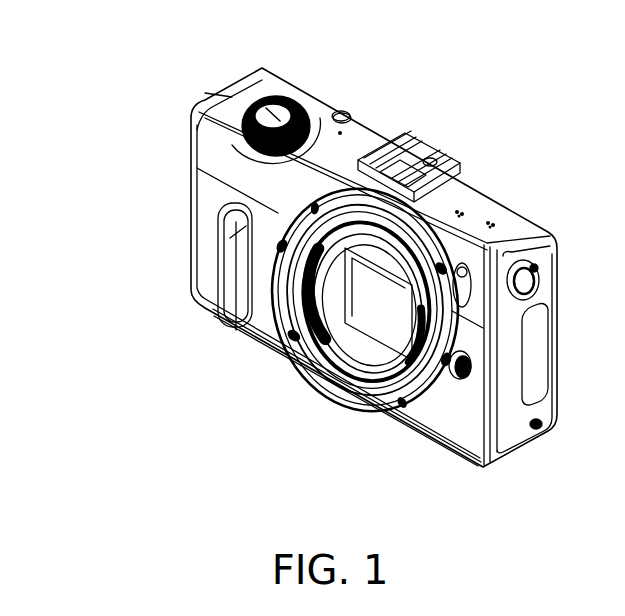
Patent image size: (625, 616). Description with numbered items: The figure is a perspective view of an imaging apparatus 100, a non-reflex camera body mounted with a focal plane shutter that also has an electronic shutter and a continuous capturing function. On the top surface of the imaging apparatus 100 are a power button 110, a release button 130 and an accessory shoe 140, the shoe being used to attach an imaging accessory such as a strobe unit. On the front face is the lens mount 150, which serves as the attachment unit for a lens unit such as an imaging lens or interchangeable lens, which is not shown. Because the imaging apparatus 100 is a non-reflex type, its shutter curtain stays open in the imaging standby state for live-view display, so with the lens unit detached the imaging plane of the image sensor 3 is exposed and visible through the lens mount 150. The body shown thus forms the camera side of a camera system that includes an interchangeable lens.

The imaging apparatus 100 is at (170, 189).
The power button 110 is at (344, 117).
The release button 130 is at (270, 110).
The accessory shoe 140 is at (430, 163).
The lens mount 150 is at (337, 375).
The image sensor 3 is at (393, 308).